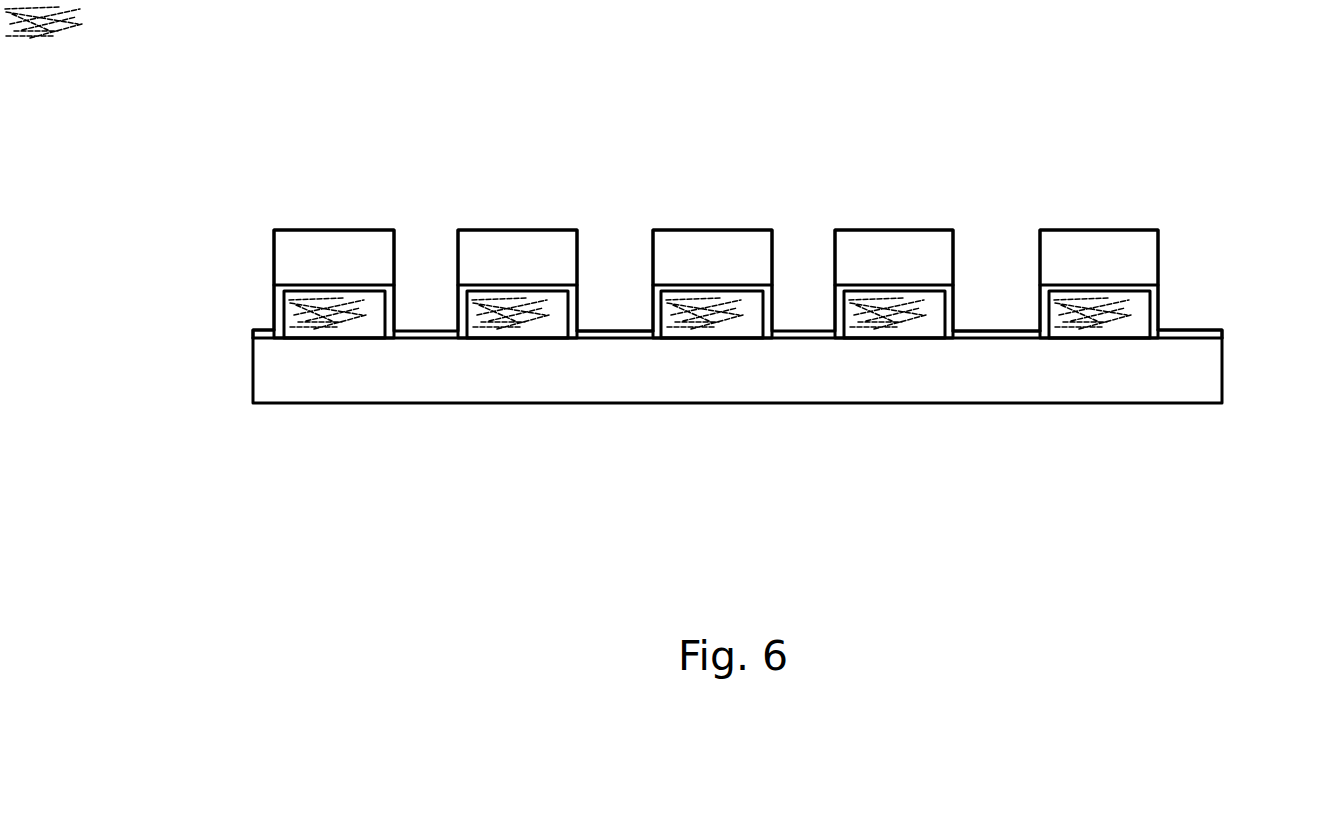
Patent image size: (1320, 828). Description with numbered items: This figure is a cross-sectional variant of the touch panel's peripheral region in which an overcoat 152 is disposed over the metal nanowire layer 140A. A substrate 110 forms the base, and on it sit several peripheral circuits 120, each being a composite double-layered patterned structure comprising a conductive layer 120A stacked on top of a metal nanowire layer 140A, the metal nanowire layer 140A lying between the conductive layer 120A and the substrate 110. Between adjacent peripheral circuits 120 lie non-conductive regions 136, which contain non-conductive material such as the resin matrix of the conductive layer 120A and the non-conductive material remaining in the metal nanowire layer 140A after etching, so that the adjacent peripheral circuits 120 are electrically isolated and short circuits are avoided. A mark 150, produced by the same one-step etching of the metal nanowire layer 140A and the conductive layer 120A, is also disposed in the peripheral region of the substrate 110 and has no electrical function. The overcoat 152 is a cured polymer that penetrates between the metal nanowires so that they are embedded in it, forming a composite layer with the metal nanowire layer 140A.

The substrate 110 is at (1155, 380).
The overcoat 152 is at (1225, 335).
The mark 150 is at (335, 228).
The non-conductive region 136 is at (620, 250).
The peripheral circuit 120 is at (535, 228).
The conductive layer 120A is at (372, 272).
The metal nanowire layer 140A is at (290, 306).